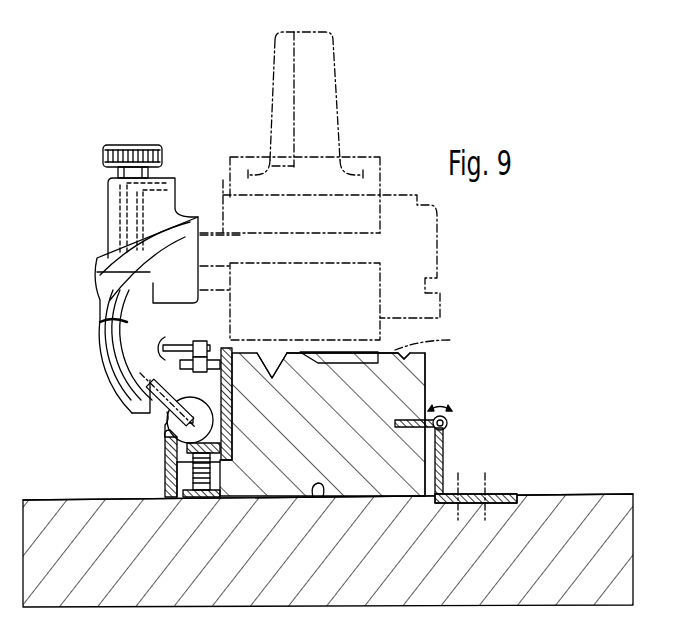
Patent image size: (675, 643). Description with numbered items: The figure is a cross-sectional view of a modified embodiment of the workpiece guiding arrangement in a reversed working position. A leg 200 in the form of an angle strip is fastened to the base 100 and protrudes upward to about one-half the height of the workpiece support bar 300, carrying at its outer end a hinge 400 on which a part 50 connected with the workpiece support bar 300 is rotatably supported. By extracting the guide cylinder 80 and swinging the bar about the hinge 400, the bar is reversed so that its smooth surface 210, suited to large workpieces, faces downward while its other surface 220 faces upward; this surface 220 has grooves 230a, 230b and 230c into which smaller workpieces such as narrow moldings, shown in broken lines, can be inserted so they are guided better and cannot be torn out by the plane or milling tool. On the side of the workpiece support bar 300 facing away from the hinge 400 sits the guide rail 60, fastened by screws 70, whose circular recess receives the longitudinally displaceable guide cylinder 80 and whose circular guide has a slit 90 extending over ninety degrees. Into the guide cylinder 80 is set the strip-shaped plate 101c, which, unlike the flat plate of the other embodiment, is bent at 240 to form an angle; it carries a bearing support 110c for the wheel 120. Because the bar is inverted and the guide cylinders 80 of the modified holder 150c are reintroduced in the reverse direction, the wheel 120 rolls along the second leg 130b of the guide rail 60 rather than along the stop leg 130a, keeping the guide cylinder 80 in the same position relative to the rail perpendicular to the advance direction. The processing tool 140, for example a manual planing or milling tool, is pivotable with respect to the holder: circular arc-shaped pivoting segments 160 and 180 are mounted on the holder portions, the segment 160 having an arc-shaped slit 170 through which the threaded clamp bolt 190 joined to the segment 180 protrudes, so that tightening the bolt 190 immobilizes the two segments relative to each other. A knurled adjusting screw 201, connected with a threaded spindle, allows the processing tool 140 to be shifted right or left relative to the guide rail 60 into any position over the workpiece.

The base 100 is at (581, 494).
The part 50 is at (322, 424).
The workpiece support bar 300 is at (427, 379).
The surface 210 is at (330, 496).
The surface 220 is at (307, 350).
The groove 230a is at (410, 352).
The groove 230b is at (348, 365).
The groove 230c is at (312, 390).
The second leg 130b is at (231, 350).
The stop leg 130a is at (168, 500).
The hinge 400 is at (449, 425).
The leg 200 is at (444, 460).
The guide cylinder 80 is at (210, 423).
The screws 70 is at (213, 482).
The guide rail 60 is at (166, 468).
The slit 90 is at (168, 437).
The plate 101c is at (163, 422).
The bend 240 is at (128, 423).
The wheel 120 is at (125, 393).
The pivoting segment 160 is at (100, 377).
The slit 170 is at (115, 360).
The pivoting segment 180 is at (103, 340).
The threaded bolt 190 is at (100, 320).
The modified holder 150c is at (95, 248).
The knurled adjusting screw 201 is at (122, 145).
The bearing support 110c is at (180, 345).
The processing tool 140 is at (374, 157).